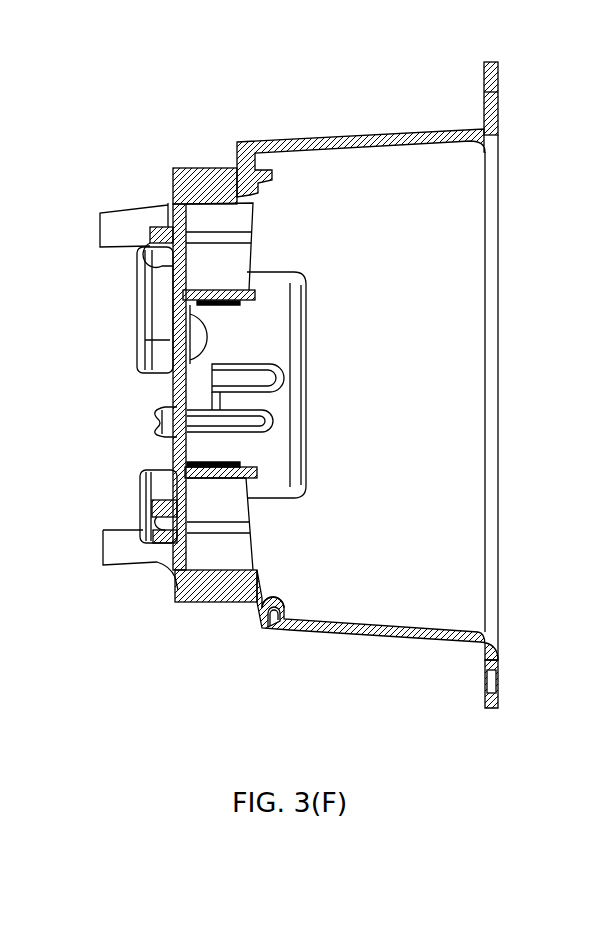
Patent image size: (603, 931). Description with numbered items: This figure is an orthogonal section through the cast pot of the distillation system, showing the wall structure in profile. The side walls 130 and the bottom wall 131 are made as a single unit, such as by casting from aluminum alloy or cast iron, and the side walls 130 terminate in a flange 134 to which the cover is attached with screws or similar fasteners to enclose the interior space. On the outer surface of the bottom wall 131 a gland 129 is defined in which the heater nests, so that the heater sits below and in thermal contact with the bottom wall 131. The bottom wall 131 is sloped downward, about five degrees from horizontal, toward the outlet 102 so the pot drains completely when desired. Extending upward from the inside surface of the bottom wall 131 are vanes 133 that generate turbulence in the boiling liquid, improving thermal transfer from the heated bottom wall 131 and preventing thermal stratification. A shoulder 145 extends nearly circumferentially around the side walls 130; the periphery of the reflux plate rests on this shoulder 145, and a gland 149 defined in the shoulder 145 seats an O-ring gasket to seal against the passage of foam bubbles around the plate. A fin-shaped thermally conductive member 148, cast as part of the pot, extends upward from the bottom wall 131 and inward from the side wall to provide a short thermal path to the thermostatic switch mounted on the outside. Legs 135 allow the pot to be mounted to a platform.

The outlet 102 is at (202, 337).
The gland 129 is at (148, 250).
The side walls 130 is at (403, 638).
The bottom wall 131 is at (178, 447).
The vanes 133 is at (250, 582).
The flange 134 is at (500, 657).
The legs 135 is at (113, 223).
The shoulder 145 is at (318, 632).
The thermally conductive member 148 is at (247, 420).
The gland 149 is at (285, 632).